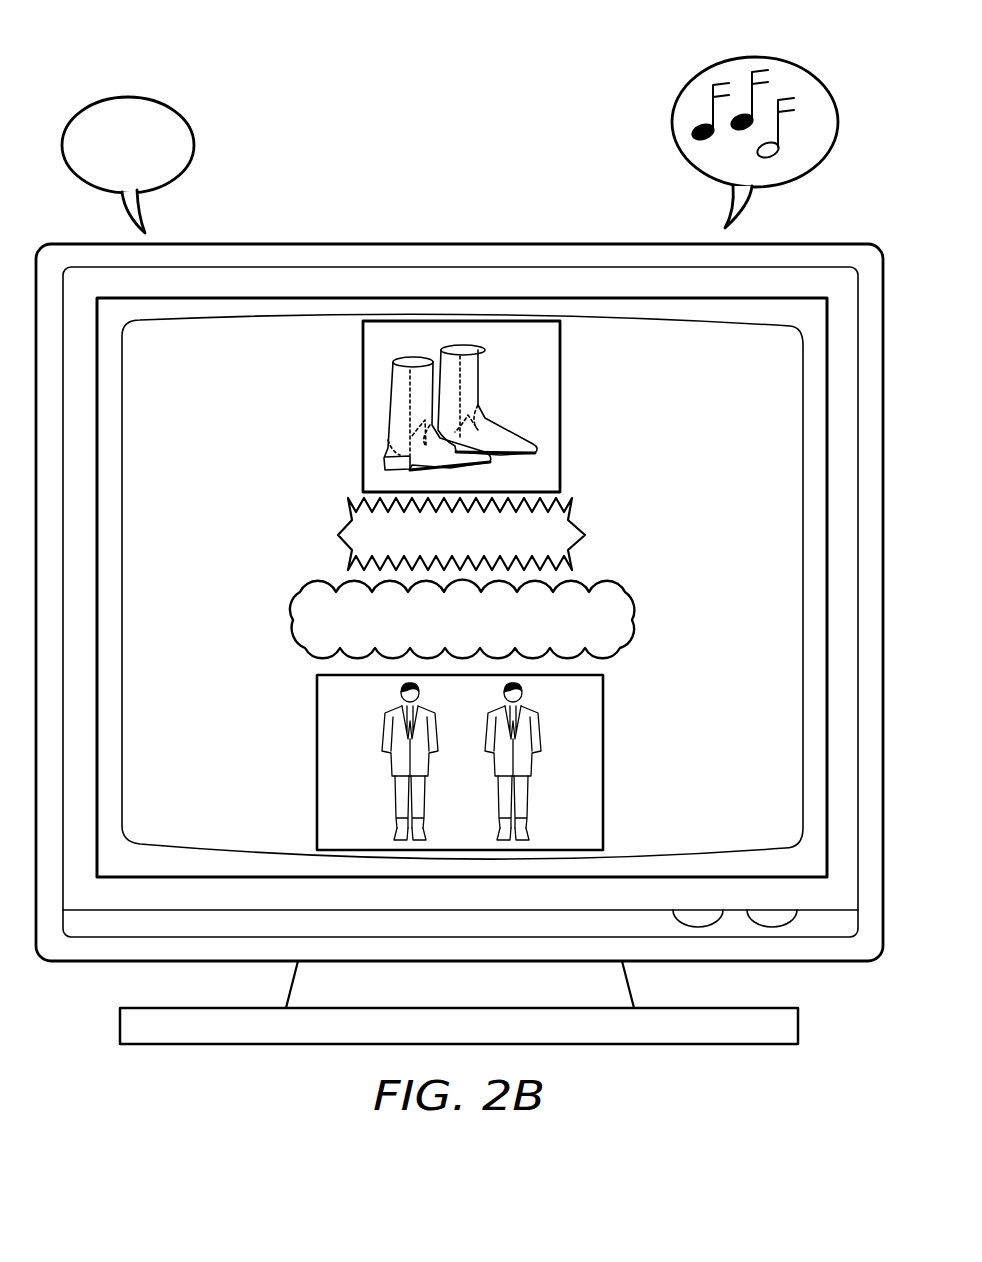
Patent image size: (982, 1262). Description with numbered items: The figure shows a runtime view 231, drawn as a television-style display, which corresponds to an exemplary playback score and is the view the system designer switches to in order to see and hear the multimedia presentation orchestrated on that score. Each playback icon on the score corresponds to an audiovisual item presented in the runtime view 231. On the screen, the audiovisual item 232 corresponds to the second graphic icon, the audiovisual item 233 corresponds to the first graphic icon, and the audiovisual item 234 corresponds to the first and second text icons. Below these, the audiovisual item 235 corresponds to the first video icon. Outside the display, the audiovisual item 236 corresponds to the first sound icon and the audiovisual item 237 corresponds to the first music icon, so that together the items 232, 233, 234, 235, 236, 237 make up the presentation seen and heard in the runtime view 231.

The runtime view 231 is at (417, 243).
The audiovisual item 232 is at (363, 395).
The audiovisual item 233 is at (586, 540).
The audiovisual item 234 is at (292, 613).
The audiovisual item 235 is at (604, 770).
The audiovisual item 236 is at (118, 97).
The audiovisual item 237 is at (773, 56).